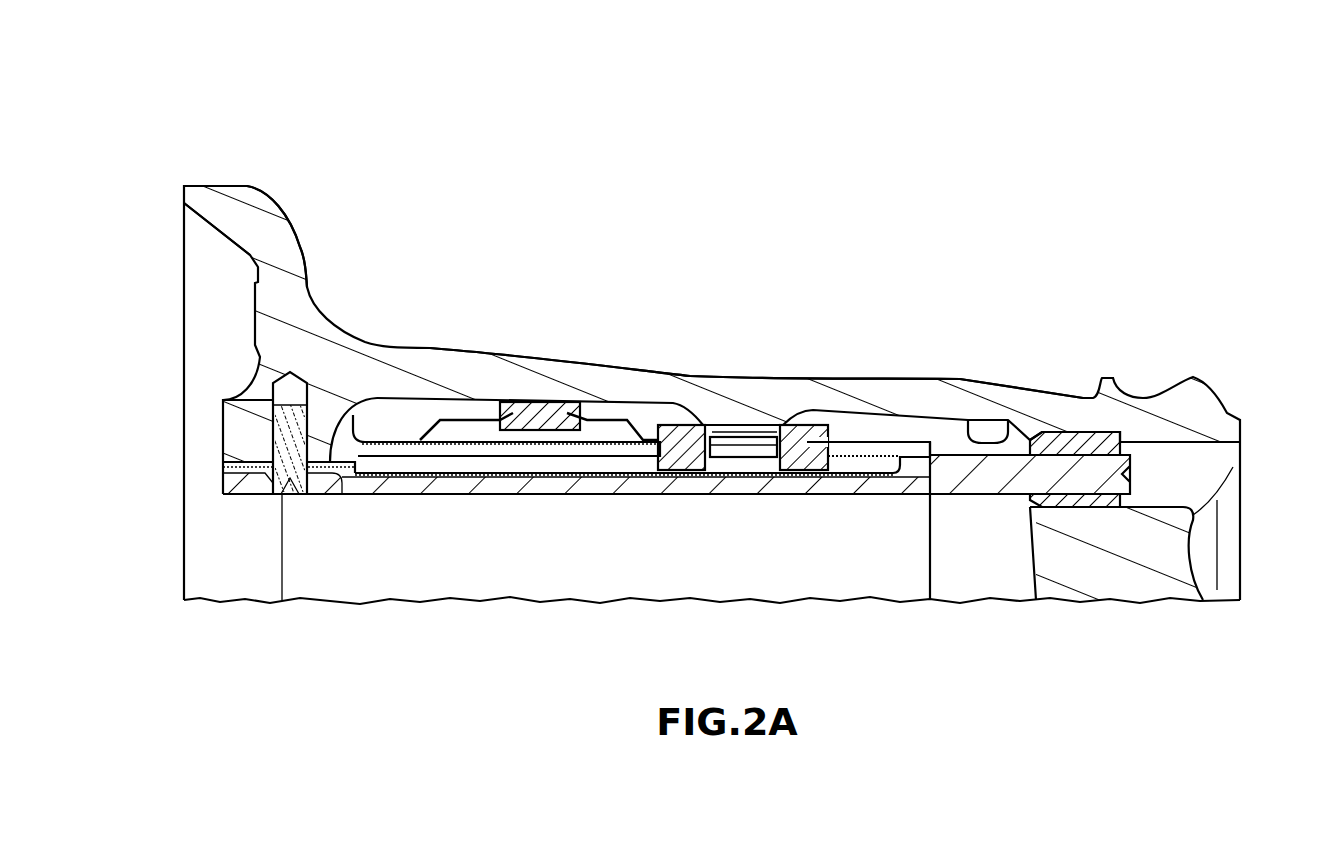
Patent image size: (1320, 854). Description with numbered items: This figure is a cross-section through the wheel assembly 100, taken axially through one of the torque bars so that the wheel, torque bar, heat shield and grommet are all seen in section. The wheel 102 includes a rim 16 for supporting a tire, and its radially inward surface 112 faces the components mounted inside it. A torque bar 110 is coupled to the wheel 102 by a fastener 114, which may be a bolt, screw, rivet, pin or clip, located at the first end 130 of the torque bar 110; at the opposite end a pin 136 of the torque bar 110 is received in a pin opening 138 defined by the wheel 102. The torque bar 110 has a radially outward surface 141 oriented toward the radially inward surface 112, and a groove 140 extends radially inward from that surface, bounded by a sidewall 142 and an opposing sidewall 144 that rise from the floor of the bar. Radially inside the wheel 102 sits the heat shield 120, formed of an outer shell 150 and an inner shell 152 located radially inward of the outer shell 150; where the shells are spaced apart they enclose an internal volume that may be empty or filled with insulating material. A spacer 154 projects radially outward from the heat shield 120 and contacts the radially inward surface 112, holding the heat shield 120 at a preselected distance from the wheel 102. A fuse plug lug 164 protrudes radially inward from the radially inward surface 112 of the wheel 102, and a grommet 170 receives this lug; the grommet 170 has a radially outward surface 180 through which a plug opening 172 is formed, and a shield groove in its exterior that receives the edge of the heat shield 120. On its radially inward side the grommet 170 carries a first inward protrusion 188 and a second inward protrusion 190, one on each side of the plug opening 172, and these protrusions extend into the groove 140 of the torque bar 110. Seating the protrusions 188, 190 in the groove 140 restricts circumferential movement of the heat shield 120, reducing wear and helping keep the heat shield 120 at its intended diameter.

The rim 16 is at (229, 197).
The wheel assembly 100 is at (700, 327).
The wheel 102 is at (1057, 402).
The torque bar 110 is at (507, 488).
The radially inward surface 112 is at (1008, 398).
The fastener 114 is at (287, 478).
The heat shield 120 is at (506, 351).
The first end 130 is at (223, 463).
The pin 136 is at (1077, 478).
The pin opening 138 is at (1185, 460).
The groove 140 is at (891, 444).
The radially outward surface 141 is at (947, 424).
The sidewall 142 is at (862, 462).
The sidewall 144 is at (612, 458).
The outer shell 150 is at (480, 412).
The inner shell 152 is at (437, 430).
The spacer 154 is at (553, 402).
The fuse plug lug 164 is at (722, 430).
The grommet 170 is at (800, 425).
The plug opening 172 is at (755, 428).
The radially outward surface 180 is at (673, 425).
The first inward protrusion 188 is at (820, 470).
The second inward protrusion 190 is at (683, 470).